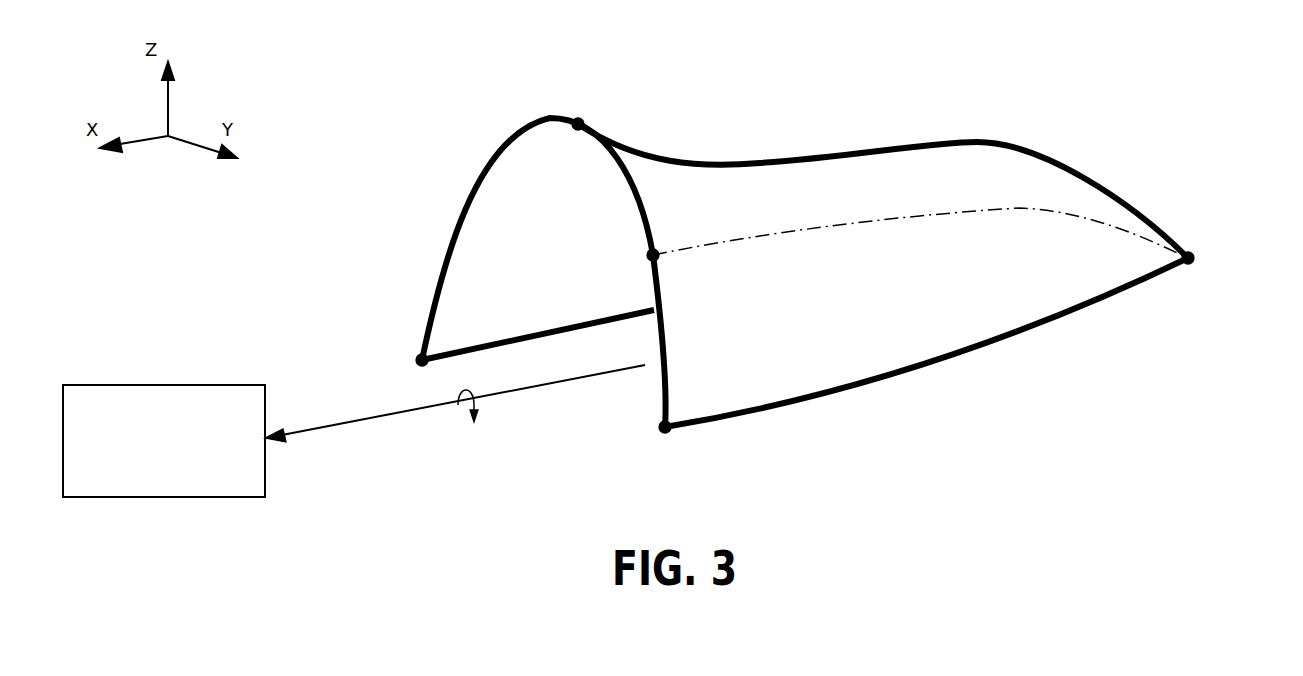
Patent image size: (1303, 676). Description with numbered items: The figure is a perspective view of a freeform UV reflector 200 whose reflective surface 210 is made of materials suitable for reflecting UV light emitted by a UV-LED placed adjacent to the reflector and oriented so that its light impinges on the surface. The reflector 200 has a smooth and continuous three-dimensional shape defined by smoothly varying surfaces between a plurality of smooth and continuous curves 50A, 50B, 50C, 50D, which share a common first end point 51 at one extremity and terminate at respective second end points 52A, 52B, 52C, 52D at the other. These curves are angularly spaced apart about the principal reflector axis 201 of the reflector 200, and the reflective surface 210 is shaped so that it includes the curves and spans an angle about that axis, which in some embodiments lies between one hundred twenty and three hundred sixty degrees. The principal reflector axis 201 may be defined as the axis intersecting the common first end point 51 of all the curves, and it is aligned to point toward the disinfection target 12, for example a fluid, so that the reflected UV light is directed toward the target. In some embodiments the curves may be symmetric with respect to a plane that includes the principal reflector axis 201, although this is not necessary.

The disinfection target 12 is at (148, 498).
The freeform UV reflector 200 is at (832, 92).
The principal reflector axis 201 is at (362, 414).
The reflective surface 210 is at (486, 205).
The curve 50A is at (976, 140).
The curve 50B is at (864, 225).
The curve 50C is at (930, 362).
The curve 50D is at (485, 345).
The common first end point 51 is at (1195, 258).
The second end point 52A is at (577, 118).
The second end point 52B is at (658, 252).
The second end point 52C is at (668, 432).
The second end point 52D is at (416, 359).